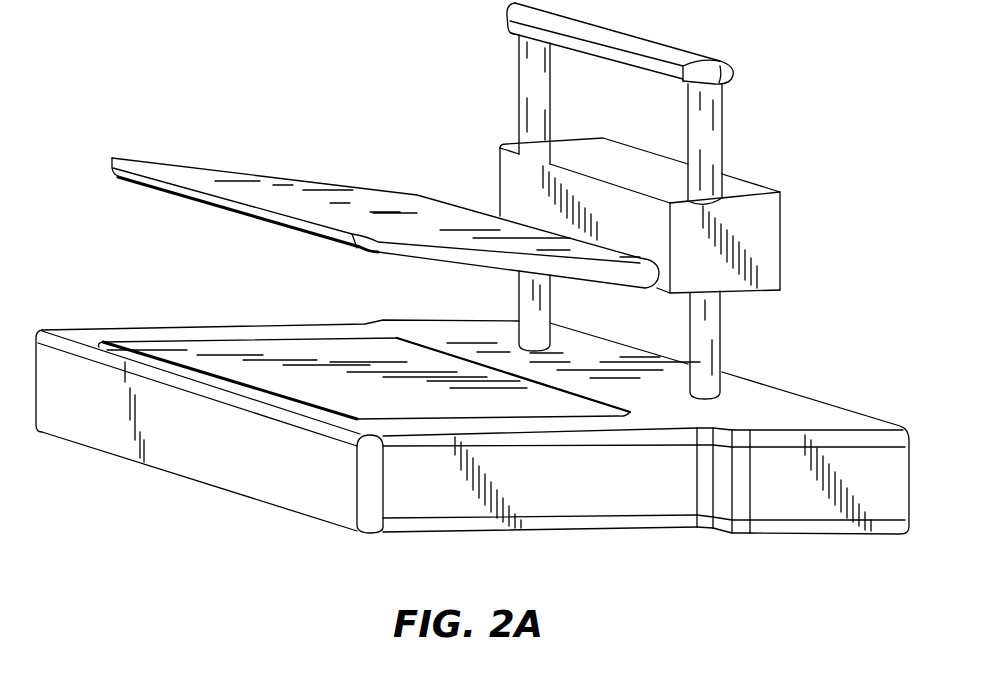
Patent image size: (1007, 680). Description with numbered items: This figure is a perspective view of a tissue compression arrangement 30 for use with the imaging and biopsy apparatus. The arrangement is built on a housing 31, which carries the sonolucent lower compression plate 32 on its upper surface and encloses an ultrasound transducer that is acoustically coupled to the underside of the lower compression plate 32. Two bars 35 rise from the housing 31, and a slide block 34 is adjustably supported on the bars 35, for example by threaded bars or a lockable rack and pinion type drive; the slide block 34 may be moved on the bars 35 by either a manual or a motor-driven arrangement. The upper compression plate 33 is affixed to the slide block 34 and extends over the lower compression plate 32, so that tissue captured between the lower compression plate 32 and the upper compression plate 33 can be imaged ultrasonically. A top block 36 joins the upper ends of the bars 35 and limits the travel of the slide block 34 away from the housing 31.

The compression arrangement 30 is at (361, 66).
The housing 31 is at (628, 505).
The lower compression plate 32 is at (366, 409).
The upper compression plate 33 is at (362, 206).
The slide block 34 is at (765, 230).
The bars 35 is at (537, 90).
The top block 36 is at (643, 38).